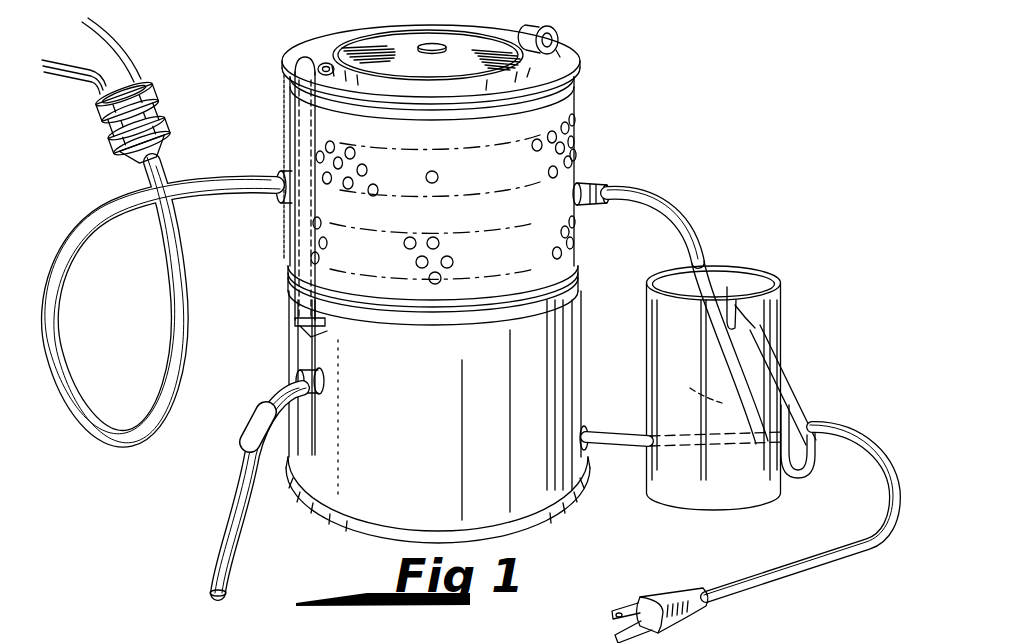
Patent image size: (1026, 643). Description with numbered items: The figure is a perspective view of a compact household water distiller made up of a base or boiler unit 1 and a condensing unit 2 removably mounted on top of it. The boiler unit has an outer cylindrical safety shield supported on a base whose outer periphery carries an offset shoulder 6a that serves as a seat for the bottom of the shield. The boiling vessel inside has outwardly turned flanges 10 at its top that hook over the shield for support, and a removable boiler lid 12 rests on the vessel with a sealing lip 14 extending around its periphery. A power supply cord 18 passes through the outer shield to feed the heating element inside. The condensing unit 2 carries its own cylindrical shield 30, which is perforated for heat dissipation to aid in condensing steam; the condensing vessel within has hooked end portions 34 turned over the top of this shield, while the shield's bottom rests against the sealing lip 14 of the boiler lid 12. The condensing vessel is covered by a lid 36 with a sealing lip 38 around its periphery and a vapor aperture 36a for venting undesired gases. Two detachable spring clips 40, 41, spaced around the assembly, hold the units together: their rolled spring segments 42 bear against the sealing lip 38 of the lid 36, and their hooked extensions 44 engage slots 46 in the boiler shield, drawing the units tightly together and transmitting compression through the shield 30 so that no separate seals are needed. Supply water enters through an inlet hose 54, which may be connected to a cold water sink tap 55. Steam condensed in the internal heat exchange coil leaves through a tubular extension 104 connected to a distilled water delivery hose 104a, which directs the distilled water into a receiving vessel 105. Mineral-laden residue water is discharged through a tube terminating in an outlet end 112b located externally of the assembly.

The boiler unit 1 is at (338, 542).
The condensing unit 2 is at (598, 99).
The offset shoulder 6a is at (572, 508).
The outwardly turned flanges 10 is at (576, 306).
The boiler lid 12 is at (582, 262).
The sealing lip 14 is at (580, 291).
The power supply cord 18 is at (748, 580).
The cylindrical shield 30 is at (582, 166).
The hooked end portions 34 is at (292, 90).
The lid 36 is at (457, 42).
The vapor aperture 36a is at (437, 40).
The sealing lip 38 is at (568, 56).
The spring clip 40 is at (305, 250).
The spring clip 41 is at (560, 38).
The rolled spring segments 42 is at (326, 62).
The hooked extensions 44 is at (298, 321).
The slots 46 is at (318, 335).
The inlet hose 54 is at (210, 170).
The cold water sink tap 55 is at (122, 62).
The tubular extension 104 is at (588, 202).
The distilled water delivery hose 104a is at (668, 211).
The receiving vessel 105 is at (768, 280).
The outlet end 112b is at (292, 378).